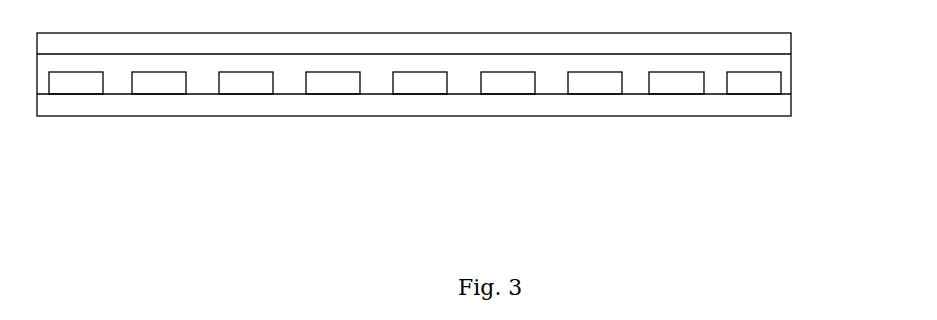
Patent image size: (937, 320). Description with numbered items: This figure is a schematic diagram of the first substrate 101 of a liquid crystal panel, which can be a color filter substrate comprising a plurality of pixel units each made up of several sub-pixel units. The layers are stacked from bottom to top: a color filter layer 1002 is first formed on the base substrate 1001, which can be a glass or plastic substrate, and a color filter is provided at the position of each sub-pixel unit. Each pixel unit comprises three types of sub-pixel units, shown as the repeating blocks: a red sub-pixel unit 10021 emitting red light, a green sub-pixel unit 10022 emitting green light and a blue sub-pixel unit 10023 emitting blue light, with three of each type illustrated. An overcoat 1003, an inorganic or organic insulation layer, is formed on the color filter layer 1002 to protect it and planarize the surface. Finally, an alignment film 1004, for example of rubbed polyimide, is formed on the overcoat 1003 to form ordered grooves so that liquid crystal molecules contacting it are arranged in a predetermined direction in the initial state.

The first substrate 101 is at (478, 183).
The base substrate 1001 is at (770, 108).
The color filter layer 1002 is at (473, 110).
The overcoat 1003 is at (770, 58).
The alignment film 1004 is at (770, 39).
The red sub-pixel unit 10021 is at (67, 85).
The green sub-pixel unit 10022 is at (154, 87).
The blue sub-pixel unit 10023 is at (244, 87).